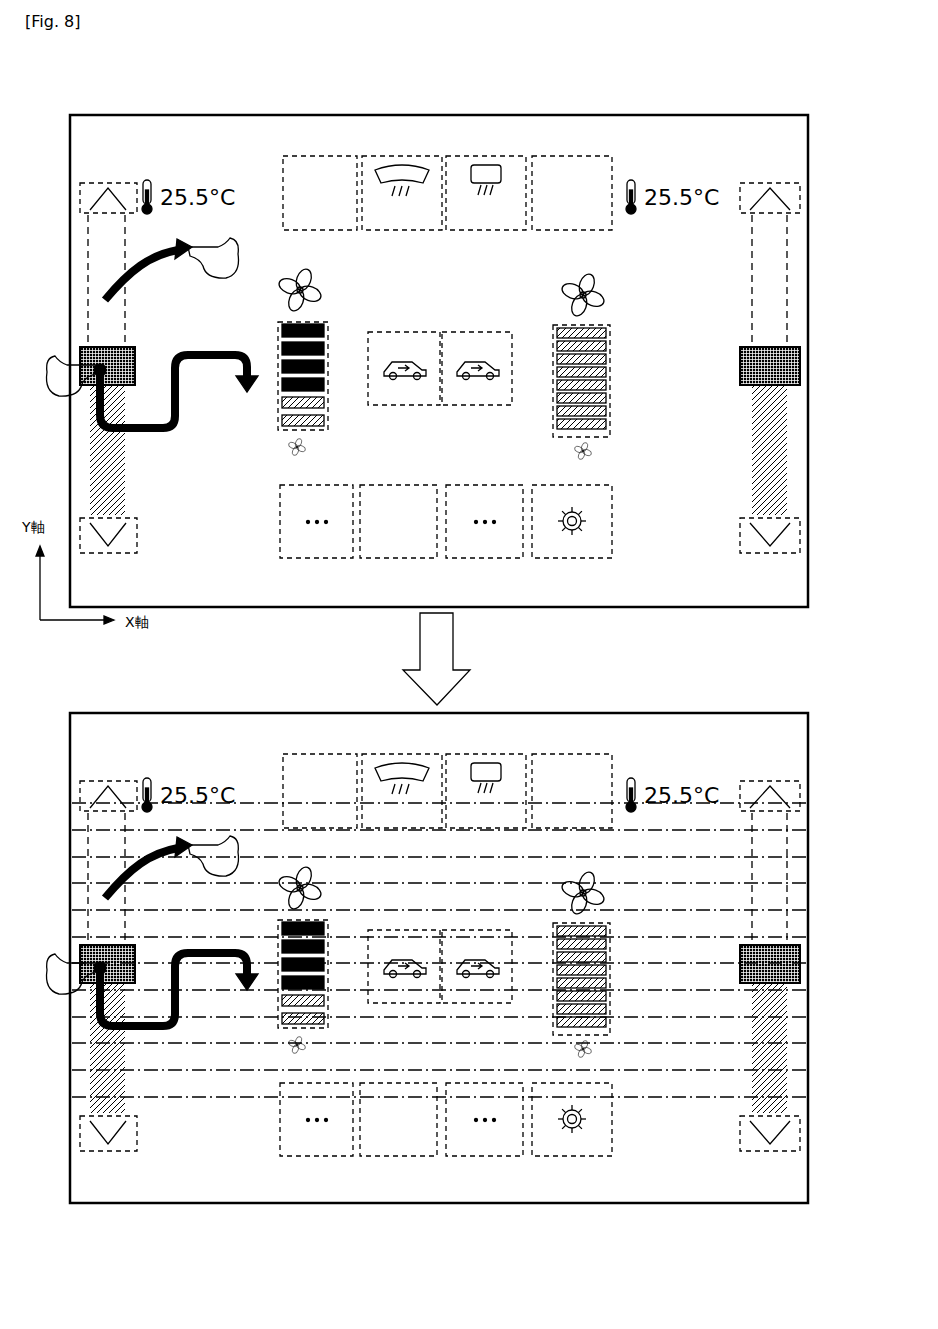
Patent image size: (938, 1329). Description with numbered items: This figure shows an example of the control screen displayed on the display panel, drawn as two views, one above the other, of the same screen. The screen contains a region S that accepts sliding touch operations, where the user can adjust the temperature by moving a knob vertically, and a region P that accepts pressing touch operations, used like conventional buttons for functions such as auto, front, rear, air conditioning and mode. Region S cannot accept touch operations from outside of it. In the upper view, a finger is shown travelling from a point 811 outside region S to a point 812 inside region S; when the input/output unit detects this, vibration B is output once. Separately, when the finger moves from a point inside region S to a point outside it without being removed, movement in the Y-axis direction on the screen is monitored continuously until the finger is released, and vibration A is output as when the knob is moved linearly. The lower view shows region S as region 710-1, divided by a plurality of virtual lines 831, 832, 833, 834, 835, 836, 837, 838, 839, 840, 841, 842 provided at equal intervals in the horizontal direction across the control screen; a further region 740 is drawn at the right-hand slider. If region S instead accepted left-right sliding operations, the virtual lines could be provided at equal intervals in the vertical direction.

The region 710-1 is at (142, 963).
The slider control region 740 is at (737, 963).
The point 811 is at (200, 250).
The point 812 is at (98, 293).
The virtual line 831 is at (465, 1097).
The virtual line 832 is at (465, 1070).
The virtual line 833 is at (465, 1043).
The virtual line 834 is at (465, 1017).
The virtual line 835 is at (465, 990).
The virtual line 836 is at (465, 963).
The virtual line 837 is at (465, 937).
The virtual line 838 is at (465, 910).
The virtual line 839 is at (465, 883).
The virtual line 840 is at (465, 857).
The virtual line 841 is at (465, 830).
The virtual line 842 is at (465, 803).